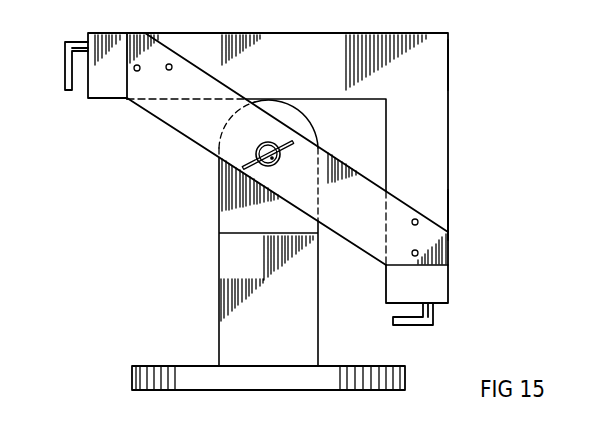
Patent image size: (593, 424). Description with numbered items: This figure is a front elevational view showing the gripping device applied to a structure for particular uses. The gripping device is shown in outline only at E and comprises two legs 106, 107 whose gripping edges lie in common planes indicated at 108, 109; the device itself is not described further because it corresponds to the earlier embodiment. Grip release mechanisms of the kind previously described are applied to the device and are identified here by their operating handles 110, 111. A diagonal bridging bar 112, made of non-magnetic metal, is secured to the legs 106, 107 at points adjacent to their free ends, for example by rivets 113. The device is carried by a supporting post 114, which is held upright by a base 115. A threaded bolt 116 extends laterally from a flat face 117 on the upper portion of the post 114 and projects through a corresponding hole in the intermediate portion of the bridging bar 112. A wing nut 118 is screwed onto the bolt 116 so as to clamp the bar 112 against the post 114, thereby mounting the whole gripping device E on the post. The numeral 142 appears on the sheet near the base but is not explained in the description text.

The leg 106 is at (437, 128).
The gripping device E is at (445, 66).
The leg 107 is at (257, 33).
The gripping edge 108 is at (448, 208).
The gripping edge 109 is at (335, 33).
The operating handle 110 is at (440, 322).
The operating handle 111 is at (67, 62).
The diagonal bridging bar 112 is at (197, 134).
The rivets 113 is at (175, 81).
The supporting post 114 is at (228, 303).
The base 115 is at (175, 370).
The threaded bolt 116 is at (275, 164).
The flat face 117 is at (222, 217).
The wing nut 118 is at (265, 143).
The base 142 is at (93, 406).